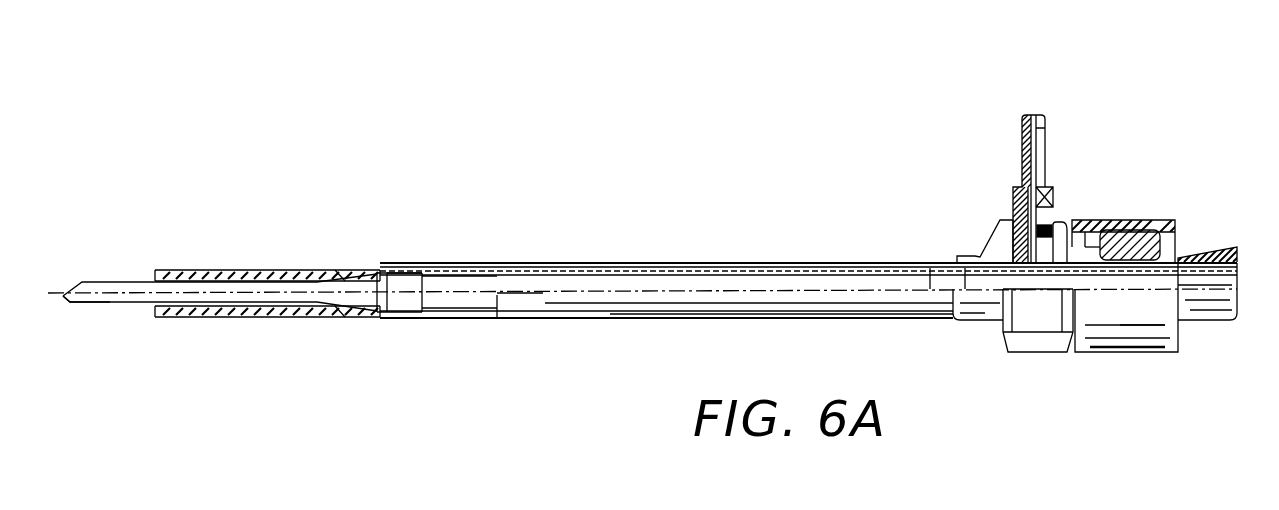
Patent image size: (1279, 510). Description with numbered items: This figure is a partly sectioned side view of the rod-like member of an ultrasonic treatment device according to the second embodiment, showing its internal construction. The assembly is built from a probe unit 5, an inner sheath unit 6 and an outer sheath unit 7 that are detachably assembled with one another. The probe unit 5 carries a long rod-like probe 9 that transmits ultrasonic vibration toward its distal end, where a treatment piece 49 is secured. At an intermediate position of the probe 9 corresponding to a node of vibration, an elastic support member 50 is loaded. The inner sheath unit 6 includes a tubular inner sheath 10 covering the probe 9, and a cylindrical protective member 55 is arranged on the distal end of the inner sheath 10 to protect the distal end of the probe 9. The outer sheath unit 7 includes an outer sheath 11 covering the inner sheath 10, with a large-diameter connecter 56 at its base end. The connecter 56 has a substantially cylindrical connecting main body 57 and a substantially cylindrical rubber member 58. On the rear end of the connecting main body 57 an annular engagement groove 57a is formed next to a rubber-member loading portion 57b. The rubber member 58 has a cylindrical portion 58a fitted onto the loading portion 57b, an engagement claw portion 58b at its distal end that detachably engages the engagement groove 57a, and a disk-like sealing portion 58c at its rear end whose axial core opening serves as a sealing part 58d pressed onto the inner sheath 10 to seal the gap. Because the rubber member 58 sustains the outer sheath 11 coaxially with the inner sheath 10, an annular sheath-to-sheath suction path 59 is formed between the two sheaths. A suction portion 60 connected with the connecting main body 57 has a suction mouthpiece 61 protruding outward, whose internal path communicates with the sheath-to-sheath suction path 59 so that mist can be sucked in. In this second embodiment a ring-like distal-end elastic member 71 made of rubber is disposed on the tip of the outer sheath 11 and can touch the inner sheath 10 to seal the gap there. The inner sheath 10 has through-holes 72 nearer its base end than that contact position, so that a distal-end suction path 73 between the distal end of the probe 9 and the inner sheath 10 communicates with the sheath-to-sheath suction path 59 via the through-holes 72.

The probe unit 5 is at (130, 265).
The treatment piece 49 is at (109, 303).
The inner sheath unit 6 is at (142, 330).
The outer sheath unit 7 is at (928, 190).
The probe 9 is at (462, 300).
The inner sheath 10 is at (596, 262).
The outer sheath 11 is at (537, 262).
The elastic support member 50 is at (404, 314).
The protective member 55 is at (218, 318).
The connecter 56 is at (995, 216).
The connecting main body 57 is at (1067, 274).
The engagement groove 57a is at (1097, 258).
The rubber-member loading portion 57b is at (1138, 245).
The rubber member 58 is at (1154, 277).
The cylindrical portion 58a is at (1117, 222).
The engagement claw portion 58b is at (1080, 228).
The sealing portion 58c is at (1178, 222).
The sealing part 58d is at (1163, 262).
The sheath-to-sheath suction path 59 is at (657, 262).
The suction portion 60 is at (1019, 146).
The suction mouthpiece 61 is at (1047, 157).
The distal-end elastic member 71 is at (238, 268).
The through-holes 72 is at (350, 272).
The distal-end suction path 73 is at (340, 272).